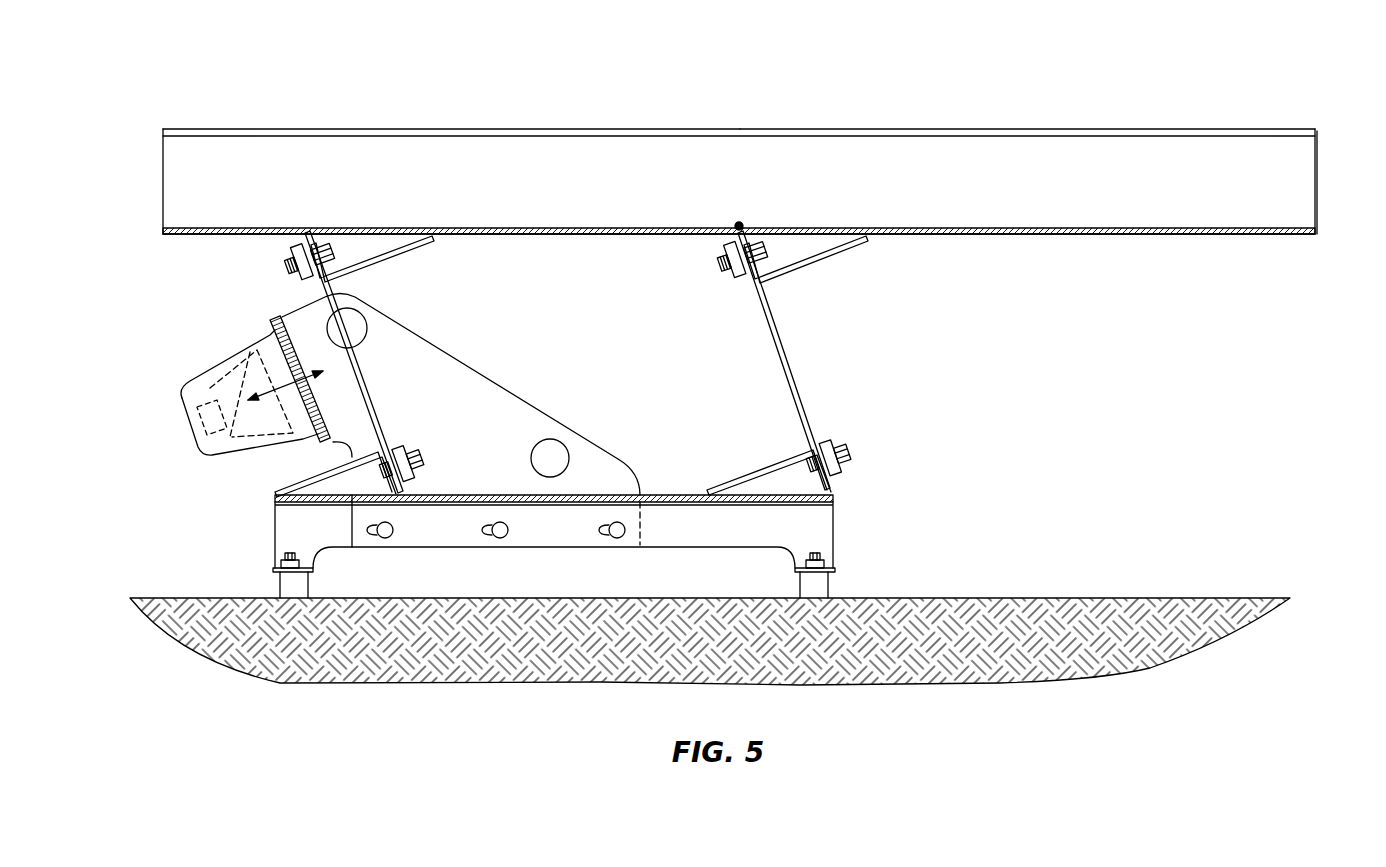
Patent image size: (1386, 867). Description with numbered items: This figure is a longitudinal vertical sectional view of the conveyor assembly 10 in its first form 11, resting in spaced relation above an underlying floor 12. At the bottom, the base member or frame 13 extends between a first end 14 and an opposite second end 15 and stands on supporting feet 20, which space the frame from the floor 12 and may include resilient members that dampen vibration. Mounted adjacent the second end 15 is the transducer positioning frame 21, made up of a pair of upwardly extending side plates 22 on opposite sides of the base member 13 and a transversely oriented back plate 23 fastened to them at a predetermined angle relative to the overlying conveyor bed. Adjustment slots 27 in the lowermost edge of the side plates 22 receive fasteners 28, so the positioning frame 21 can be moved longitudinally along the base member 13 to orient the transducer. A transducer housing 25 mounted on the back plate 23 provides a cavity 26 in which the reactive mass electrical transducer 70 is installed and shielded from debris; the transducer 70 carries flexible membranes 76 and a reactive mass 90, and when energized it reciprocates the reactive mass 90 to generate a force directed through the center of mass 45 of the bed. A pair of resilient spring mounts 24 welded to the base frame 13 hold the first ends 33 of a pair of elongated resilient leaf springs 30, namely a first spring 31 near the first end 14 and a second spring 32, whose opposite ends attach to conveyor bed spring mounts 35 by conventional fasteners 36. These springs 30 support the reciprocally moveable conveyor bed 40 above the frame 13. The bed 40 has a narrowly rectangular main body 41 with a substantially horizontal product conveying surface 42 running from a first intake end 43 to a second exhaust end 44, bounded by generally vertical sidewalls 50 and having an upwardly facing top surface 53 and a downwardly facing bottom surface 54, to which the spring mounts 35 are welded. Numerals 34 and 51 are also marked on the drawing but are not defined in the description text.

The conveyor assembly 10 is at (857, 93).
The first form of the apparatus 11 is at (1006, 260).
The floor 12 is at (1085, 598).
The base member or frame 13 is at (831, 517).
The first end 14 is at (835, 565).
The second end 15 is at (275, 508).
The supporting feet 20 is at (285, 553).
The transducer mounting or positioning frame 21 is at (503, 405).
The side plates 22 is at (433, 436).
The back plate 23 is at (272, 330).
The resilient spring mounts 24 is at (275, 487).
The transducer housing or enclosure 25 is at (200, 372).
The cavity 26 is at (180, 395).
The adjustment slots 27 is at (385, 522).
The fasteners 28 is at (390, 540).
The resilient leaf springs 30 is at (248, 287).
The first spring 31 is at (772, 315).
The second spring 32 is at (366, 382).
The first end 33 is at (815, 452).
The bolt 34 is at (310, 282).
The conveyor bed spring mounts or fixtures 35 is at (377, 258).
The fasteners 36 is at (330, 250).
The reciprocally moveable conveyor bed 40 is at (1180, 108).
The main body 41 is at (983, 153).
The product conveying surface 42 is at (898, 228).
The first intake end 43 is at (183, 228).
The second exhaust end 44 is at (1278, 228).
The center of mass 45 is at (739, 222).
The sidewalls 50 is at (600, 122).
The beam side surface 51 is at (522, 160).
The top surface 53 is at (627, 228).
The bottom surface 54 is at (885, 238).
The reactive mass electrical transducer 70 is at (200, 455).
The flexible membranes 76 is at (851, 457).
The reactive mass 90 is at (242, 338).